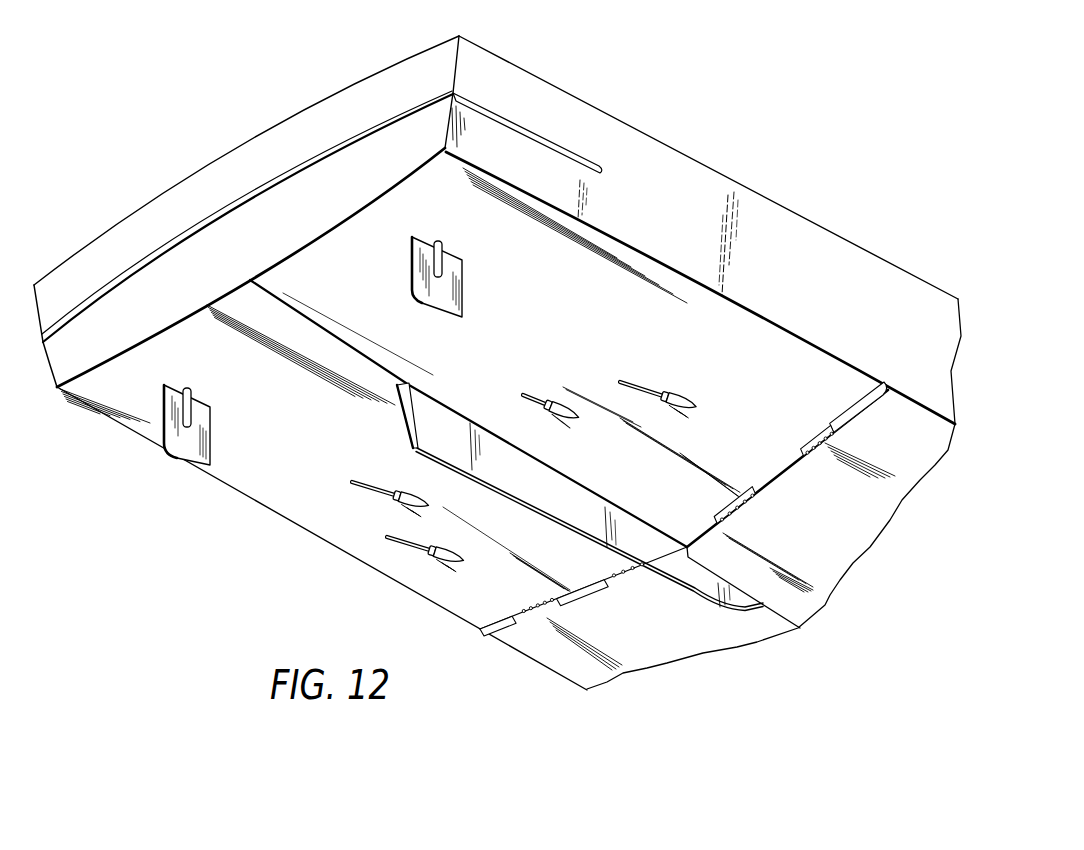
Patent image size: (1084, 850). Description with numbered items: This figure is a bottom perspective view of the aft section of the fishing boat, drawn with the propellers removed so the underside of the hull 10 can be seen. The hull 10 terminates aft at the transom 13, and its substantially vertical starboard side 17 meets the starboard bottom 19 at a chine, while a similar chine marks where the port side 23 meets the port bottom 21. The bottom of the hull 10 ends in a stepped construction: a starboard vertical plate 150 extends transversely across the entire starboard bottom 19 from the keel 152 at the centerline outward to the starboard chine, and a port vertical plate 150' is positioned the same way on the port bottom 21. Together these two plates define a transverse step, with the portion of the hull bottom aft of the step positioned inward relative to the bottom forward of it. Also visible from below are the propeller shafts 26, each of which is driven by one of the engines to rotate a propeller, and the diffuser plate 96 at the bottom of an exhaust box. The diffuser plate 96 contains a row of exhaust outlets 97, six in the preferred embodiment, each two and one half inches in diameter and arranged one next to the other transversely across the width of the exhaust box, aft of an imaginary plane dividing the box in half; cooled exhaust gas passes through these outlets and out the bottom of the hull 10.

The hull 10 is at (823, 598).
The transom 13 is at (234, 171).
The starboard side 17 is at (707, 196).
The starboard bottom 19 is at (721, 326).
The port bottom 21 is at (275, 495).
The port side 23 is at (50, 374).
The propeller shaft 26 is at (545, 394).
The diffuser plate 96 is at (797, 443).
The exhaust outlets 97 is at (806, 452).
The starboard vertical plate 150 is at (817, 468).
The port vertical plate 150' is at (558, 608).
The keel 152 is at (560, 500).